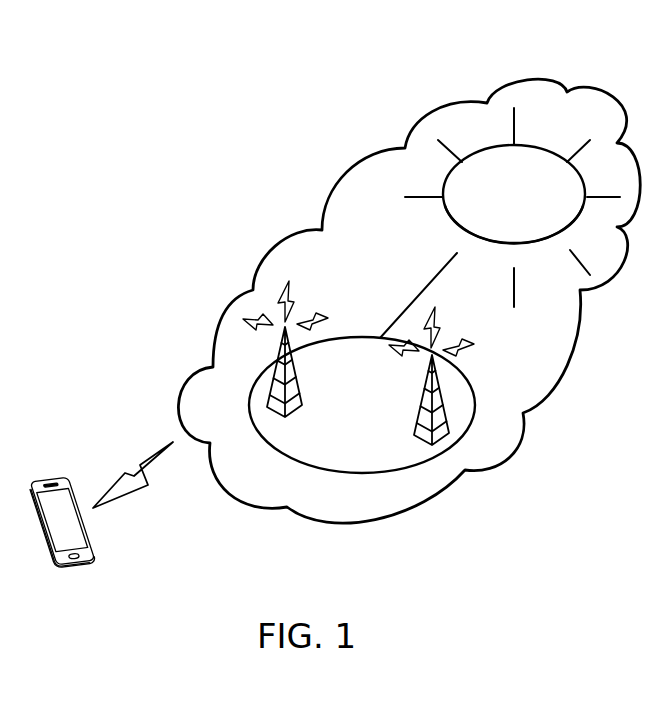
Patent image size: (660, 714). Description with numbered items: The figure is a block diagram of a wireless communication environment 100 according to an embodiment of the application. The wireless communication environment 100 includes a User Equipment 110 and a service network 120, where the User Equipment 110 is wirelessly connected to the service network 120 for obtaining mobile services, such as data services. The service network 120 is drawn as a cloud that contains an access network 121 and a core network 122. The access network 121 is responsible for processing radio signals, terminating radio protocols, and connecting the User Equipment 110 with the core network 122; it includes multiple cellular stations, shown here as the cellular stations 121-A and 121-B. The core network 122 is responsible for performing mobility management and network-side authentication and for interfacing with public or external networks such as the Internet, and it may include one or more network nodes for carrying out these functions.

The wireless communication environment 100 is at (110, 80).
The User Equipment (UE) 110 is at (50, 477).
The service network 120 is at (588, 87).
The access network 121 is at (337, 444).
The cellular station 121-A is at (272, 369).
The cellular station 121-B is at (447, 410).
The core network 122 is at (532, 239).